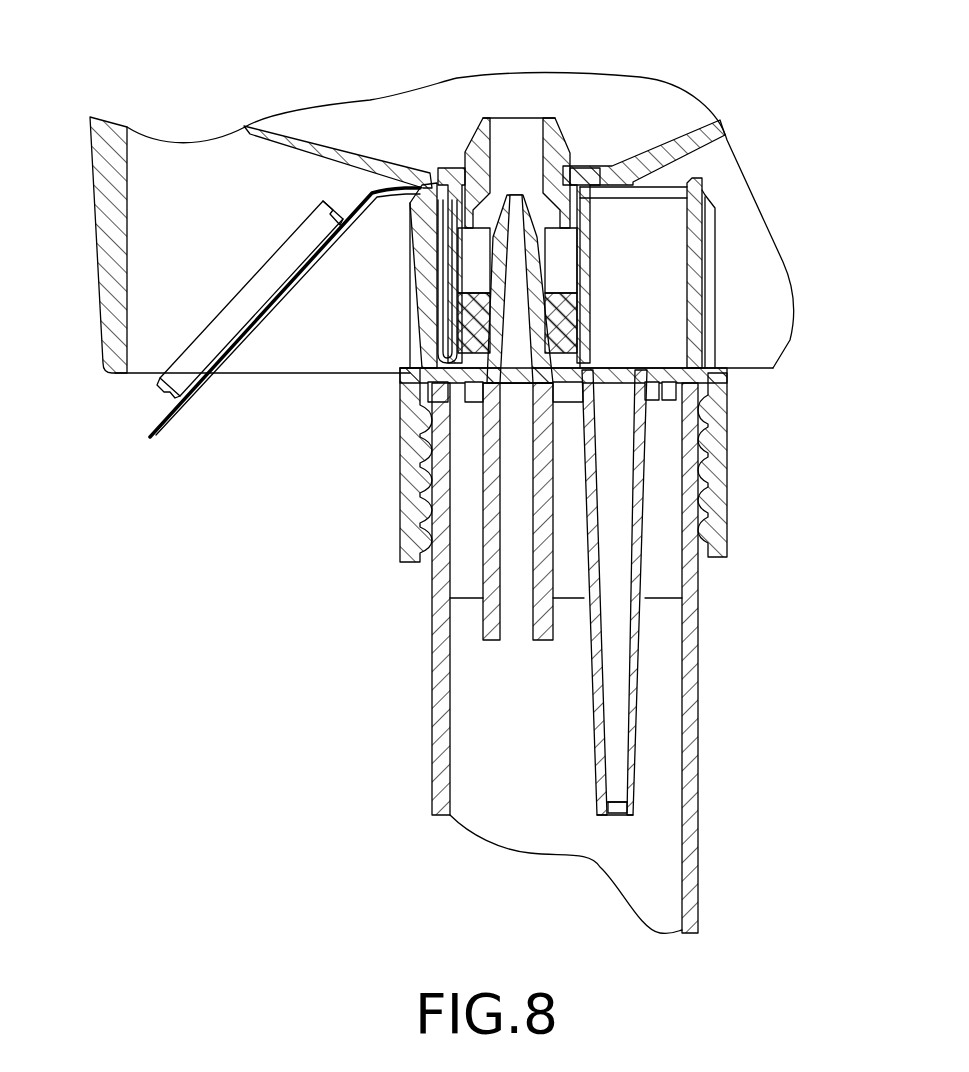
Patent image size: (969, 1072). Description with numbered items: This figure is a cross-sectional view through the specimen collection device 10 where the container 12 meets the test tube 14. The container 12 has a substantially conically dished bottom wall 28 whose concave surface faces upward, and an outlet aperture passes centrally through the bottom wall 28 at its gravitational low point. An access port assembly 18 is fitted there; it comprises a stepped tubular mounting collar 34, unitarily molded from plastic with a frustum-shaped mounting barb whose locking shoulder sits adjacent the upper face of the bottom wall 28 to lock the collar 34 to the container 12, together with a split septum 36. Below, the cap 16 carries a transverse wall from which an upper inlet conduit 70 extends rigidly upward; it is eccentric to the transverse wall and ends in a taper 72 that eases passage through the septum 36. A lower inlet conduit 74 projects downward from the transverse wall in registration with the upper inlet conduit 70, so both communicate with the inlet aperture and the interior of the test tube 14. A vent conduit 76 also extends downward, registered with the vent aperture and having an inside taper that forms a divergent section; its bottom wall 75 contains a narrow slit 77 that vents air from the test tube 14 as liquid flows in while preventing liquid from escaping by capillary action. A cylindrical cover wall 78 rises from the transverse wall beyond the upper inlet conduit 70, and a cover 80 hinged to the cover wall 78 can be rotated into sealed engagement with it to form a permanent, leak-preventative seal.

The specimen collection device 10 is at (840, 225).
The container 12 is at (97, 240).
The test tube 14 is at (432, 782).
The cap 16 is at (402, 530).
The access port assembly 18 is at (517, 100).
The bottom wall 28 is at (347, 137).
The mounting collar 34 is at (552, 148).
The split septum 36 is at (580, 318).
The upper inlet conduit 70 is at (545, 268).
The taper 72 is at (556, 172).
The lower inlet conduit 74 is at (482, 628).
The bottom wall 75 is at (620, 813).
The vent conduit 76 is at (622, 690).
The narrow slit 77 is at (612, 812).
The cover wall 78 is at (408, 288).
The cover 80 is at (158, 438).